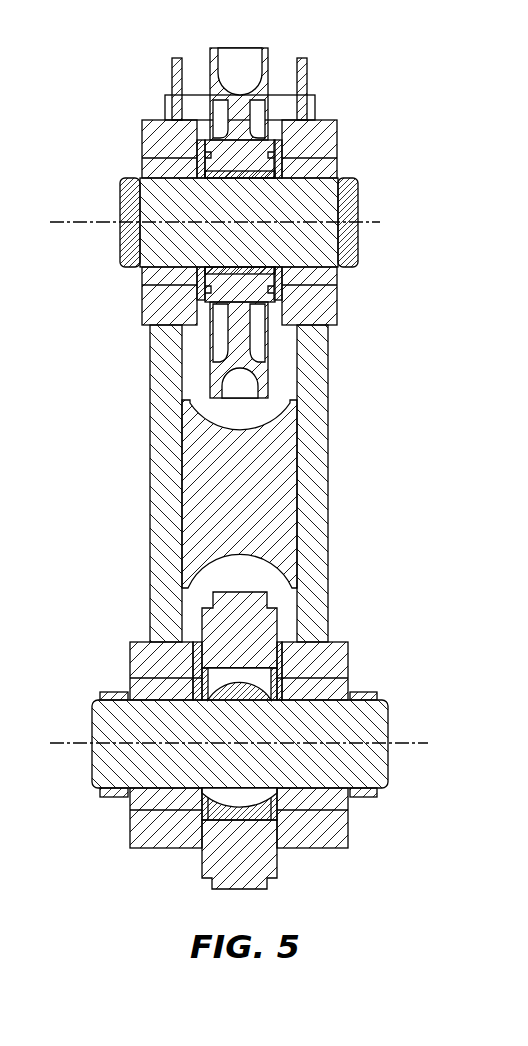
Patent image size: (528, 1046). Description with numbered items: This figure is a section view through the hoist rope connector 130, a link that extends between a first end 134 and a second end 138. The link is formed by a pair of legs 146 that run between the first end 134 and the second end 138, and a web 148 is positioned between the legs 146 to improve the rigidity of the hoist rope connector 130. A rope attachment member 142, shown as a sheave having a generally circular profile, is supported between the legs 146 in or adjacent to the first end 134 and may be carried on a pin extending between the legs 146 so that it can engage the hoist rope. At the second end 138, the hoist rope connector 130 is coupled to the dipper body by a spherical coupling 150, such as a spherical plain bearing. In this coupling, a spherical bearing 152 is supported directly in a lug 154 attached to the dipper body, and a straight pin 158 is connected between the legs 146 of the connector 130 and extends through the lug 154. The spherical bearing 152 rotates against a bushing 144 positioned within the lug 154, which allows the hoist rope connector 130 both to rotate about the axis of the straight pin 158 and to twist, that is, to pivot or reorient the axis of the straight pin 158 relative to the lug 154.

The hoist rope connector 130 is at (375, 158).
The first end 134 is at (152, 133).
The second end 138 is at (142, 833).
The rope attachment member 142 is at (257, 82).
The bushing 144 is at (228, 665).
The legs 146 is at (167, 493).
The web 148 is at (263, 457).
The spherical coupling 150 is at (283, 678).
The spherical bearing 152 is at (243, 800).
The lug 154 is at (233, 602).
The straight pin 158 is at (115, 723).